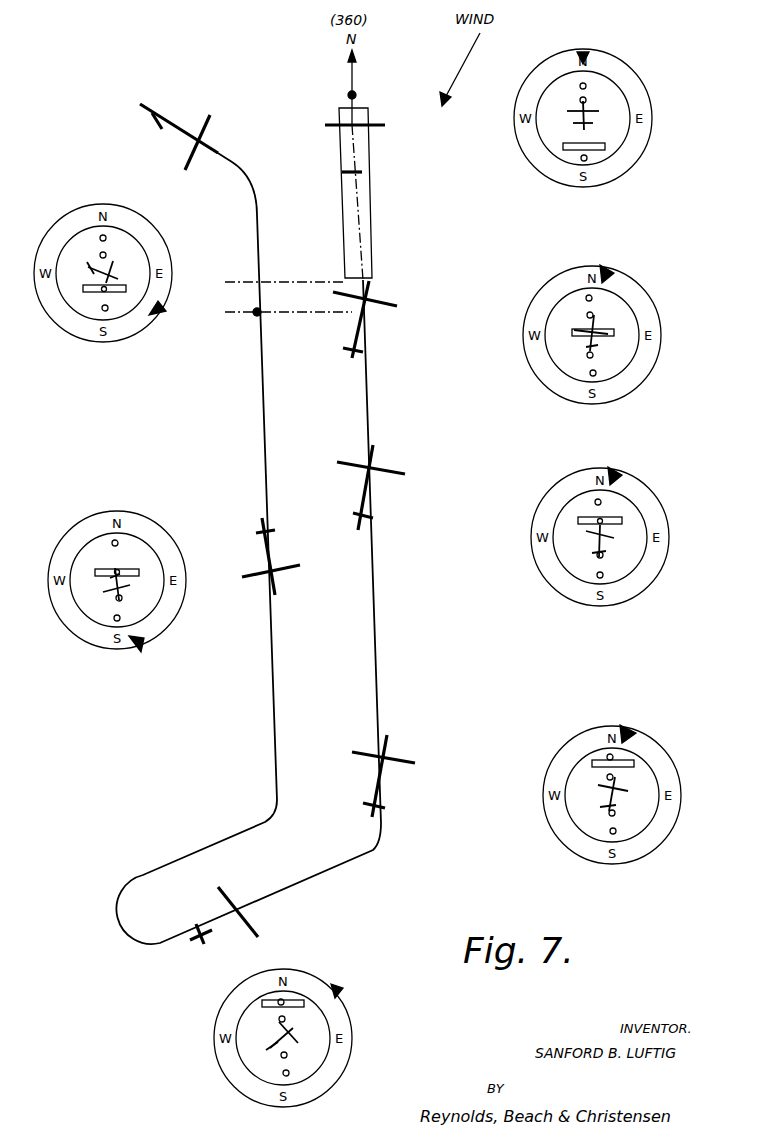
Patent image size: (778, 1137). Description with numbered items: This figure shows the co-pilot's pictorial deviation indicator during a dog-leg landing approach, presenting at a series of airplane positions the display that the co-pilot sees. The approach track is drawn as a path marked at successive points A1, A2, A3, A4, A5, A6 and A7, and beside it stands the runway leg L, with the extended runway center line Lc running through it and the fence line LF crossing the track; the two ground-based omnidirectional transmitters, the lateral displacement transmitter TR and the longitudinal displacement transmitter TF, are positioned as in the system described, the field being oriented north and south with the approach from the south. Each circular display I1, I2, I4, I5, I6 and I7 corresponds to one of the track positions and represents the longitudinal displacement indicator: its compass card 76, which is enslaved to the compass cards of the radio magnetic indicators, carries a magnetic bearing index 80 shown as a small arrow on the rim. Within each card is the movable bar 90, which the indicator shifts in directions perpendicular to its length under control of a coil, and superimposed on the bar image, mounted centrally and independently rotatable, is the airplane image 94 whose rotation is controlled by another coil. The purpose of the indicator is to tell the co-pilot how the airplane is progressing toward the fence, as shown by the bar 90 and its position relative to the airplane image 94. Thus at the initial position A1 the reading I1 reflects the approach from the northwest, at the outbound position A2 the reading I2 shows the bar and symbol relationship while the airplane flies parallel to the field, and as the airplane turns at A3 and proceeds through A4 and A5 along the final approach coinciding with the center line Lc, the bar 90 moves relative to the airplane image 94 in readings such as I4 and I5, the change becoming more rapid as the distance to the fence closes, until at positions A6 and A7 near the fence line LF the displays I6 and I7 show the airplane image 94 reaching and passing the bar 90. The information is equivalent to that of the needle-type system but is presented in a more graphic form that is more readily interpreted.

The compass card 76 is at (348, 578).
The magnetic bearing index 80 is at (401, 520).
The movable bar 90 is at (377, 575).
The airplane image 94 is at (400, 576).
The starting leg / column L is at (373, 228).
The extended runway center line Lc is at (362, 196).
The fence line LF is at (316, 314).
The lateral displacement transmitter TR is at (356, 94).
The longitudinal displacement transmitter TF is at (260, 316).
The initial approach position A1 is at (190, 118).
The outbound approach position A2 is at (266, 556).
The turn position A3 is at (228, 925).
The early final approach position A4 is at (380, 778).
The final approach position A5 is at (368, 492).
The course position 6 A6 is at (362, 318).
The course position 7 A7 is at (364, 152).
The instrument indication at position A1 I1 is at (117, 343).
The instrument indication at position A2 I2 is at (172, 622).
The indicator reading 4 I4 is at (654, 857).
The instrument indication at position A5 I5 is at (645, 597).
The indicator reading 6 I6 is at (637, 395).
The indicator reading 7 I7 is at (650, 130).